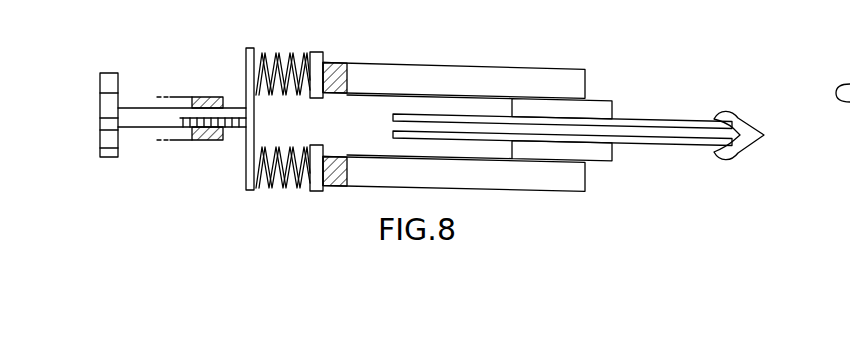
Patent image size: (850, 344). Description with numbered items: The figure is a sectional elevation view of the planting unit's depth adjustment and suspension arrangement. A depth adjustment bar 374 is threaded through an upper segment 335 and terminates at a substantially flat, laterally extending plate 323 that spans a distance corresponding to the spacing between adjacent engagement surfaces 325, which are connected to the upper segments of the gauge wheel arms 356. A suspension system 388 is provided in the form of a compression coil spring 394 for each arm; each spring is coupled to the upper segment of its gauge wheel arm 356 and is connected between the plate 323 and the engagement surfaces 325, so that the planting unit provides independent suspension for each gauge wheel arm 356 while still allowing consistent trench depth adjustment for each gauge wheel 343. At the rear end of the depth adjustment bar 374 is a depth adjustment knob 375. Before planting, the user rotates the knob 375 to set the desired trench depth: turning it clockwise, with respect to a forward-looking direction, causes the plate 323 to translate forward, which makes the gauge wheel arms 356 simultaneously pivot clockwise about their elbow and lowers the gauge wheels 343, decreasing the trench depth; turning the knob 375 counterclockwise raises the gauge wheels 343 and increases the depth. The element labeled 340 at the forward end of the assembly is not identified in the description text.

The plate 323 is at (247, 195).
The engagement surfaces 325 is at (315, 98).
The upper segment 335 is at (212, 93).
The tip 340 is at (767, 135).
The gauge wheel 343 is at (602, 100).
The gauge wheel arm 356 is at (460, 69).
The depth adjustment bar 374 is at (147, 127).
The depth adjustment knob 375 is at (93, 142).
The suspension system 388 is at (349, 40).
The compression coil spring 394 is at (282, 48).